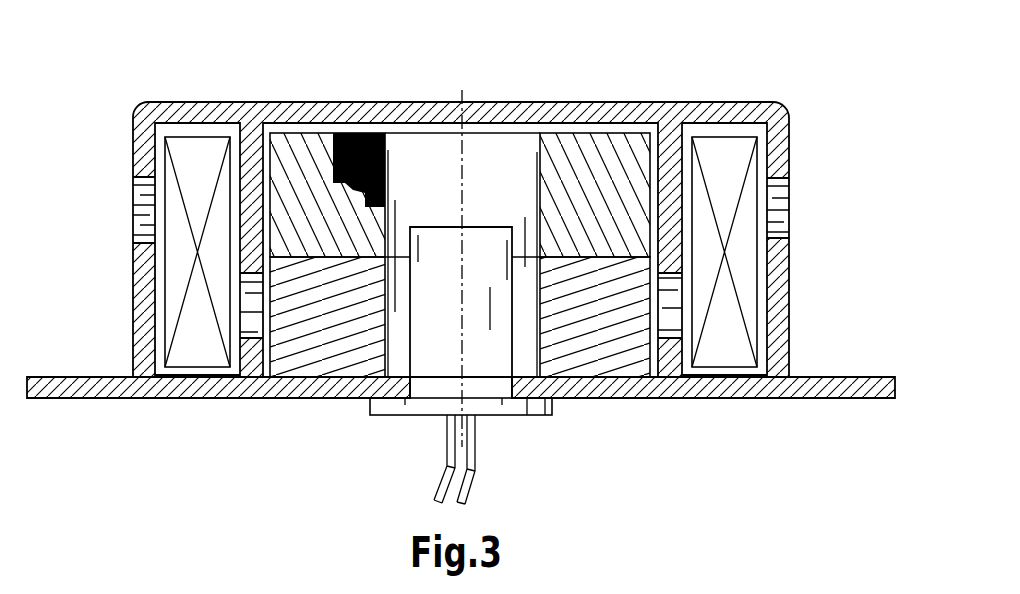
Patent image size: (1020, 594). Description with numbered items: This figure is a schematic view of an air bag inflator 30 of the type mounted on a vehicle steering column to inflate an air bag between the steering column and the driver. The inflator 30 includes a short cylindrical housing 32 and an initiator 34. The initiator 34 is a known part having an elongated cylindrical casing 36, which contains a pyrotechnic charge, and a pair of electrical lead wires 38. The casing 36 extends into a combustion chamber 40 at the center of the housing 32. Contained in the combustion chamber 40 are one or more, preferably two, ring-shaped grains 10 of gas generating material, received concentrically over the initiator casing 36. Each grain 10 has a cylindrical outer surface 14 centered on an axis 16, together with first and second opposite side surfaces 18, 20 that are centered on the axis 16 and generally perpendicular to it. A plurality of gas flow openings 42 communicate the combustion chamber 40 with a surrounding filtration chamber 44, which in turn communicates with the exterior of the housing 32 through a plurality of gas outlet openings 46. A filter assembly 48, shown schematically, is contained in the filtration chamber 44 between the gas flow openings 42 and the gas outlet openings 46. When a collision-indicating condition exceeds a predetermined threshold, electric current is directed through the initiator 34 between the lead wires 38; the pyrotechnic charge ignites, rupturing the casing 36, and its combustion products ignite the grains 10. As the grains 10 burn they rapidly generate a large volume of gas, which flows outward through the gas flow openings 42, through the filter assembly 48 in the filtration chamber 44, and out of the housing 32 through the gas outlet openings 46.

The inflator 30 is at (137, 66).
The housing 32 is at (139, 102).
The grain 10 is at (315, 131).
The outer surface 14 is at (518, 148).
The axis 16 is at (652, 163).
The first side surface 18 is at (616, 140).
The second side surface 20 is at (572, 262).
The initiator 34 is at (427, 413).
The casing 36 is at (417, 350).
The lead wires 38 is at (473, 462).
The combustion chamber 40 is at (500, 171).
The gas flow openings 42 is at (239, 293).
The filtration chamber 44 is at (214, 177).
The gas outlet openings 46 is at (136, 203).
The filter assembly 48 is at (188, 370).